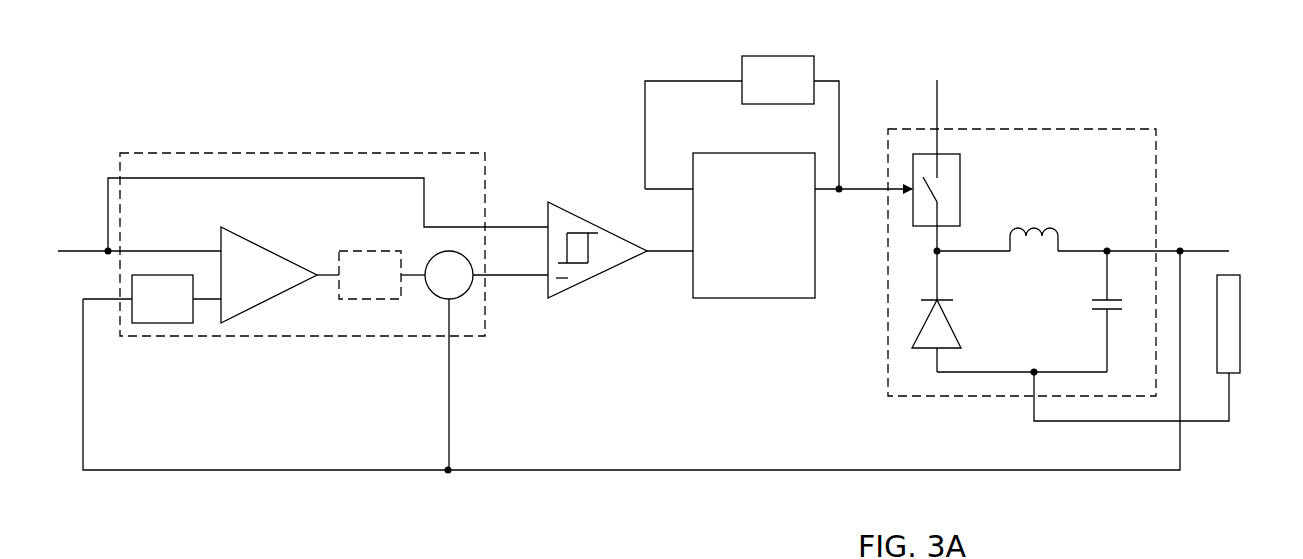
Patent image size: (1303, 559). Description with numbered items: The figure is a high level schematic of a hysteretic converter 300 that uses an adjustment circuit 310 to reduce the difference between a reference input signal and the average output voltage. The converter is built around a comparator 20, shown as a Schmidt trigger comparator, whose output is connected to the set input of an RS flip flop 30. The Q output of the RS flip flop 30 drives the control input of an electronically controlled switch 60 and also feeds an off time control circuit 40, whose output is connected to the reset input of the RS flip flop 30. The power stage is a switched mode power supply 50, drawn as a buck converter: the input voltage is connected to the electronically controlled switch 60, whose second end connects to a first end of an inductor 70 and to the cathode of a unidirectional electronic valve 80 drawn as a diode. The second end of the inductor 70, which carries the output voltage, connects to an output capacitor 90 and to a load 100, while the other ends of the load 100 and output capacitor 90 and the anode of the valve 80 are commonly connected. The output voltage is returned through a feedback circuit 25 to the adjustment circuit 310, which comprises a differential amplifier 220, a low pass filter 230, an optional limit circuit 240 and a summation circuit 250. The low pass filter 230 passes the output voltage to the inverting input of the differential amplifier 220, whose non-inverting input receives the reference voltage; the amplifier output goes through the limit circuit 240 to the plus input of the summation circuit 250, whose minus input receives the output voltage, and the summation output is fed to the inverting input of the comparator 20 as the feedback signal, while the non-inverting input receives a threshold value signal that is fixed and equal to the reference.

The hysteretic converter 300 is at (513, 69).
The adjustment circuit 310 is at (486, 178).
The differential amplifier 220 is at (272, 252).
The low pass filter 230 is at (157, 324).
The limit circuit 240 is at (376, 300).
The summation circuit 250 is at (449, 251).
The comparator 20 is at (582, 283).
The RS flip flop 30 is at (743, 298).
The off time control circuit 40 is at (742, 92).
The switched mode power supply 50 is at (1157, 171).
The electronically controlled switch 60 is at (962, 202).
The inductor 70 is at (1059, 238).
The unidirectional electronic valve 80 is at (960, 340).
The output capacitor 90 is at (1092, 312).
The load 100 is at (1240, 335).
The feedback circuit 25 is at (791, 471).